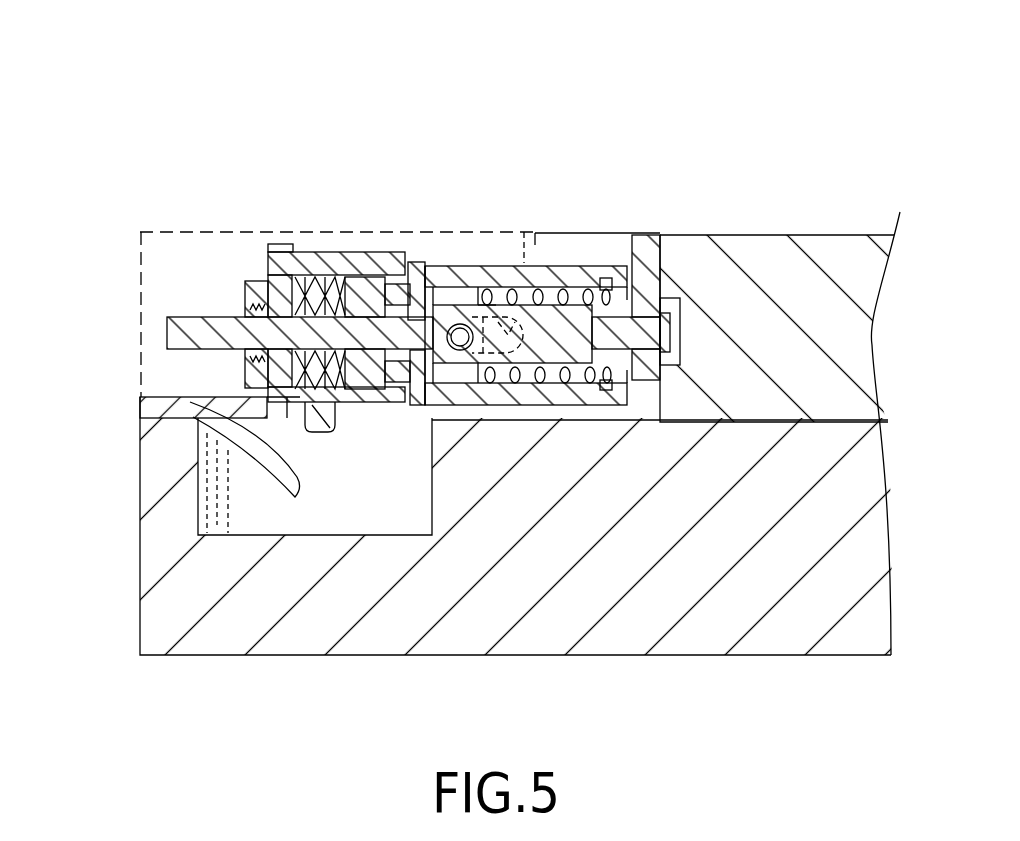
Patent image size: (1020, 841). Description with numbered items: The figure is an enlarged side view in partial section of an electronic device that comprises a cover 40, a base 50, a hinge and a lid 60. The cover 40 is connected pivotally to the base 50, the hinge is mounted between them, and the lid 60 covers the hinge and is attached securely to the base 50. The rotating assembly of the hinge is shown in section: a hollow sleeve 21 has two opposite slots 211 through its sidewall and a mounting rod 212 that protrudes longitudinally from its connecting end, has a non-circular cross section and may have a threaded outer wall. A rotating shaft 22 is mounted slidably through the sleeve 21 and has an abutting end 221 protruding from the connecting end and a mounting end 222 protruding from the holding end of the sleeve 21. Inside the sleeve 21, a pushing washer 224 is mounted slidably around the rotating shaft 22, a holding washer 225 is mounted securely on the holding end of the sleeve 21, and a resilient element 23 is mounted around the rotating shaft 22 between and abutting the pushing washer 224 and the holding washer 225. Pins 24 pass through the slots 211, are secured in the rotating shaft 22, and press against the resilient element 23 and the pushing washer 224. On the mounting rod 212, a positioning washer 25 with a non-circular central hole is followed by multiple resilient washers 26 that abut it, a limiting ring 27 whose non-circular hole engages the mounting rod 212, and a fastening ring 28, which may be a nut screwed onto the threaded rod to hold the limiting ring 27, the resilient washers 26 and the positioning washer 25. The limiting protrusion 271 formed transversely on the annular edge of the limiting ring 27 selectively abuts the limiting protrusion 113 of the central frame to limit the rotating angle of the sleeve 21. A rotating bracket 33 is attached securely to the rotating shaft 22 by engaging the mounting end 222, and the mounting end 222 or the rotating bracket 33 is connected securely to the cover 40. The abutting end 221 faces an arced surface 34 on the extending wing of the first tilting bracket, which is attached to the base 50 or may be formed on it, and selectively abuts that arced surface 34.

The sleeve 21 is at (440, 270).
The rotating shaft 22 is at (577, 262).
The resilient element 23 is at (560, 330).
The pins 24 is at (463, 323).
The positioning washer 25 is at (340, 277).
The resilient washers 26 is at (311, 276).
The limiting ring 27 is at (277, 372).
The fastening ring 28 is at (254, 298).
The rotating bracket 33 is at (648, 250).
The arced surface 34 is at (283, 455).
The cover 40 is at (803, 262).
The base 50 is at (712, 625).
The lid 60 is at (248, 232).
The limiting protrusion 113 is at (284, 264).
The slots 211 is at (524, 232).
The mounting rod 212 is at (337, 408).
The abutting end 221 is at (168, 332).
The mounting end 222 is at (683, 330).
The pushing washer 224 is at (487, 312).
The holding washer 225 is at (609, 278).
The limiting protrusion 271 is at (278, 250).